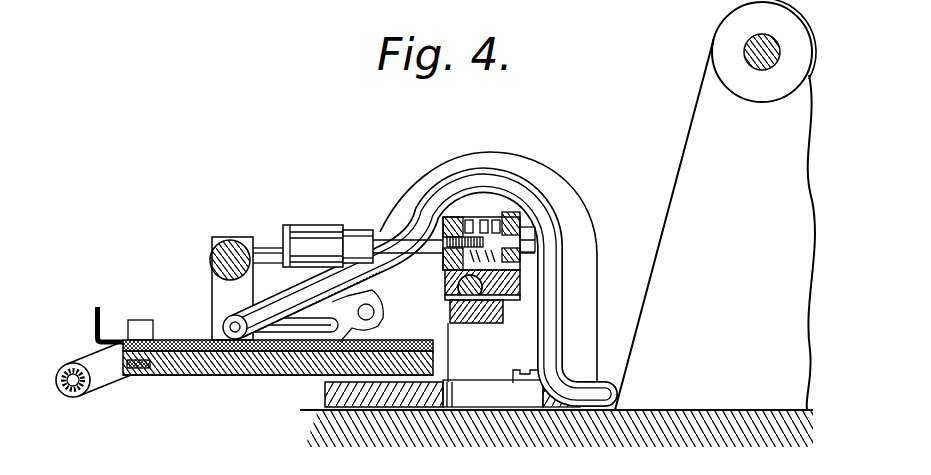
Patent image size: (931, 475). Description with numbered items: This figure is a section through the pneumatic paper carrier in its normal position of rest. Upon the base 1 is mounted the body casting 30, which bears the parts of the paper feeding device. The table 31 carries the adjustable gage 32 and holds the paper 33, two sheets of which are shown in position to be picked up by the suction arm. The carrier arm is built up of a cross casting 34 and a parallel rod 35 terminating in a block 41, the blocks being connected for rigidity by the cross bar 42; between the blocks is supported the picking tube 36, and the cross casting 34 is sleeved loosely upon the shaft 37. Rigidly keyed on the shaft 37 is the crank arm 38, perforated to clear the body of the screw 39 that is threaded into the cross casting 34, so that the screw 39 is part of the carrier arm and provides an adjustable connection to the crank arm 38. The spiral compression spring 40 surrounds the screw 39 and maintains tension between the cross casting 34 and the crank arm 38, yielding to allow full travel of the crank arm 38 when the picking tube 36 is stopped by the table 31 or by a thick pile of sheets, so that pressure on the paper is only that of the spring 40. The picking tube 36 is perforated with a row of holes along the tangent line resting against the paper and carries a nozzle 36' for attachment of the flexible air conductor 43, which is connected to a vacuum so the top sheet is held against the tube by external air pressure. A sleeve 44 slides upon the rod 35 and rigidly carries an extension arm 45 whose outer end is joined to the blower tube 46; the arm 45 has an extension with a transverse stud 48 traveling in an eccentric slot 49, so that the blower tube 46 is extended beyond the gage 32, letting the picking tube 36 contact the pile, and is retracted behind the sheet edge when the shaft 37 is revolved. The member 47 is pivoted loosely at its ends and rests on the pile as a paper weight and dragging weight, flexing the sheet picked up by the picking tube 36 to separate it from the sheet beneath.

The base 1 is at (353, 433).
The body casting 30 is at (325, 393).
The table 31 is at (203, 375).
The adjustable gage 32 is at (94, 320).
The paper 33 is at (150, 340).
The cross casting 34 is at (460, 218).
The parallel rod 35 is at (265, 250).
The picking tube 36 is at (192, 314).
The nozzle 36' is at (275, 304).
The shaft 37 is at (463, 325).
The crank arm 38 is at (522, 272).
The screw 39 is at (535, 214).
The spiral compression spring 40 is at (483, 222).
The block 41 is at (227, 290).
The cross bar 42 is at (238, 240).
The flexible air conductor 43 is at (455, 183).
The sleeve 44 is at (310, 230).
The extension arm 45 is at (112, 380).
The blower tube 46 is at (73, 370).
The member 47 is at (277, 375).
The transverse stud 48 is at (374, 312).
The eccentric slot 49 is at (408, 220).